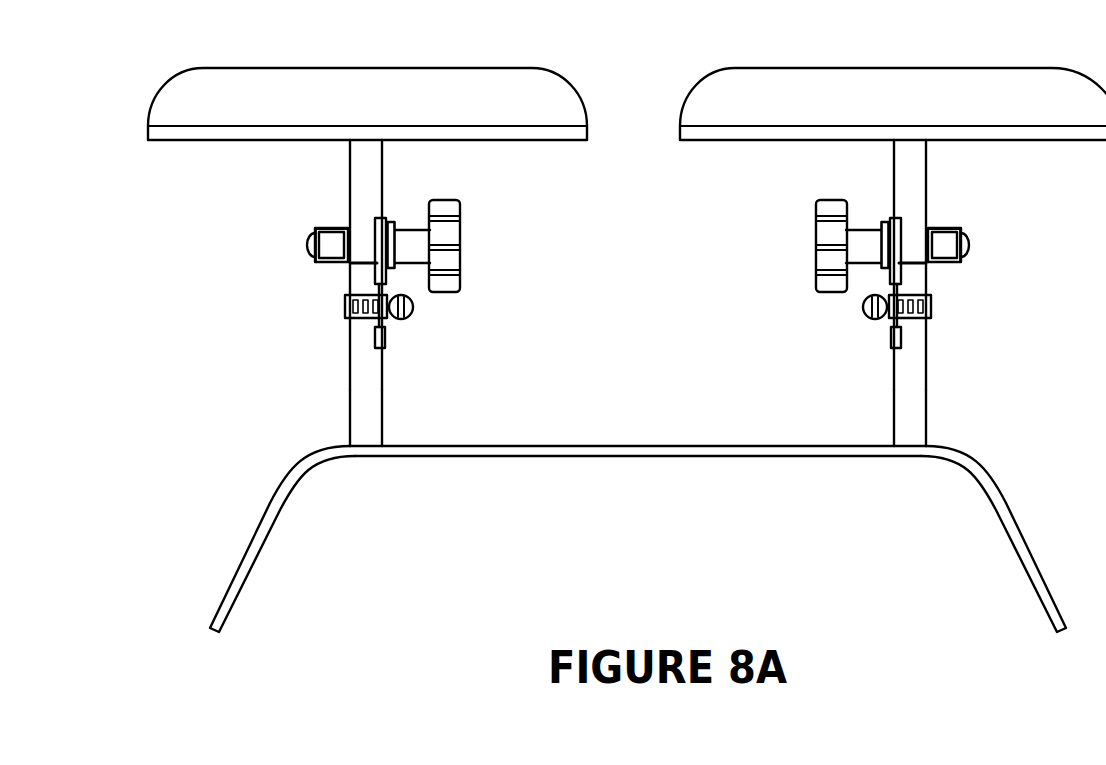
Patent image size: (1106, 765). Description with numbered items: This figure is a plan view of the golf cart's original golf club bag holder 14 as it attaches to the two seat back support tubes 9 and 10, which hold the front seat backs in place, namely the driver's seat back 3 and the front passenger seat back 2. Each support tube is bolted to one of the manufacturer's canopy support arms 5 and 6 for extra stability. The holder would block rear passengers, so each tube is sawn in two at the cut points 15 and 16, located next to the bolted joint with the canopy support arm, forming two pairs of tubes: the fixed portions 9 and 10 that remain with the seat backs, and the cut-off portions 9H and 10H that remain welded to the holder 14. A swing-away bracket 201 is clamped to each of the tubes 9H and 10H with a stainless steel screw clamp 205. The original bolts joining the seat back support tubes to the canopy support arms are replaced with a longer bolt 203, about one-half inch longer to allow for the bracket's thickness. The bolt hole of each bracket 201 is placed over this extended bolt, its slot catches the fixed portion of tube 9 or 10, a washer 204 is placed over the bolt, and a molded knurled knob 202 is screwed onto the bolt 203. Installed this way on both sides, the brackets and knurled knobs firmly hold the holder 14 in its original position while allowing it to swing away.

The front passenger seat back 2 is at (720, 110).
The driver's seat back 3 is at (543, 115).
The canopy support arm 5 is at (327, 228).
The canopy support arm 6 is at (943, 228).
The seat back support tube 9 is at (373, 162).
The seat support tube 9H is at (377, 425).
The seat back support tube 10 is at (908, 157).
The seat support tube 10H is at (907, 418).
The golf club bag holder 14 is at (613, 447).
The cut point 15 is at (346, 266).
The cut point 16 is at (928, 263).
The swing-away bracket 201 is at (388, 342).
The molded knurled knob 202 is at (452, 234).
The longer bolt 203 is at (311, 241).
The washer 204 is at (392, 219).
The screw clamp 205 is at (413, 305).